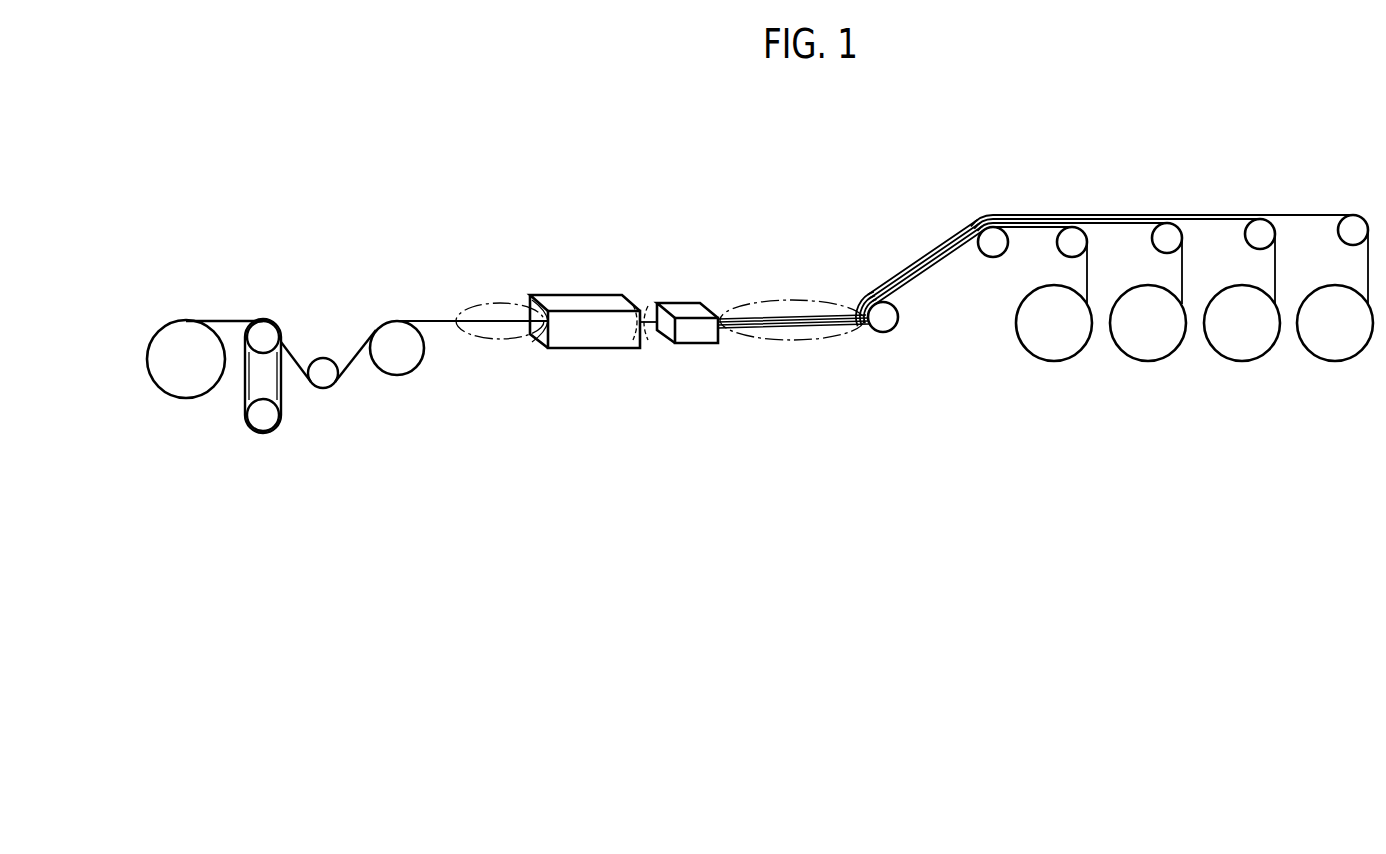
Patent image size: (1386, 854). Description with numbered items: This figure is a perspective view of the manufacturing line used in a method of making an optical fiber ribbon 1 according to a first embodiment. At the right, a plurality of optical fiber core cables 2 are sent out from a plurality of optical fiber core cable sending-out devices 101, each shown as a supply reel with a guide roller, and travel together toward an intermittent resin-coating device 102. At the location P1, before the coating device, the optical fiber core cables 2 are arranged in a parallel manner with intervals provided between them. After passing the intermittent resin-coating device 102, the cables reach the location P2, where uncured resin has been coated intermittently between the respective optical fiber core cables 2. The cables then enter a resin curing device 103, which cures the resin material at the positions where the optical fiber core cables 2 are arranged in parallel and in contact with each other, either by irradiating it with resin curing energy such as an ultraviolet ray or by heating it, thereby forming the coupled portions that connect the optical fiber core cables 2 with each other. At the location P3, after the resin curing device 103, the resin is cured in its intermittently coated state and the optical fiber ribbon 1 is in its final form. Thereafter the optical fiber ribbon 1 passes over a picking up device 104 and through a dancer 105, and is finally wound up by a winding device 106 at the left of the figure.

The optical fiber ribbon 1 is at (420, 320).
The optical fiber core cables 2 is at (961, 222).
The optical fiber core cable sending-out devices 101 is at (1165, 367).
The intermittent resin-coating device 102 is at (702, 303).
The resin curing device 103 is at (558, 295).
The picking up device 104 is at (379, 373).
The dancer 105 is at (263, 428).
The winding device 106 is at (175, 330).
The location P1 is at (826, 344).
The location P2 is at (657, 340).
The location P3 is at (502, 340).